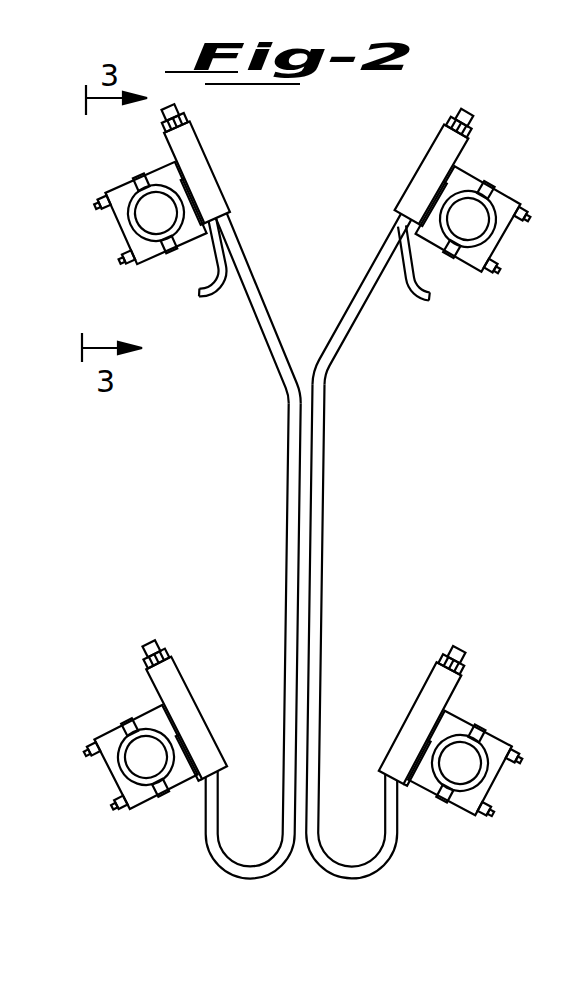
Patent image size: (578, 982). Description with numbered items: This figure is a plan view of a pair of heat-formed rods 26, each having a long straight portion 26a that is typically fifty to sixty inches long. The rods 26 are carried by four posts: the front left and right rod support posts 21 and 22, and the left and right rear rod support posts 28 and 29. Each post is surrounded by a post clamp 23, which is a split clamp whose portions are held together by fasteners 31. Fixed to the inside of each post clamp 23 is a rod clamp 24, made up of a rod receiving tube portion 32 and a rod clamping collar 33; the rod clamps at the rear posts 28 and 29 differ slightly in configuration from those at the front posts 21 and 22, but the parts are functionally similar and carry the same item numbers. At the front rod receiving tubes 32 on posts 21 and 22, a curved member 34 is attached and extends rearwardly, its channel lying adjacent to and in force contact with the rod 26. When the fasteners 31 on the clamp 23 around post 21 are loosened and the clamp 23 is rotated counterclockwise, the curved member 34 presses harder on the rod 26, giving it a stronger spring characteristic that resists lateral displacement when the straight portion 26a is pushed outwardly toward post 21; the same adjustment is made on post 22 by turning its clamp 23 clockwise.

The front left rod support post 21 is at (158, 252).
The front right rod support post 22 is at (470, 262).
The post clamp 23 is at (162, 160).
The rod clamp 24 is at (232, 192).
The rods 26 is at (350, 879).
The straight portion of the rod 26a is at (287, 482).
The left rear rod support post 28 is at (122, 743).
The right rear rod support post 29 is at (482, 742).
The fasteners 31 is at (127, 263).
The rod receiving tube portion 32 is at (205, 156).
The rod clamping collar 33 is at (182, 112).
The curved member 34 is at (197, 291).